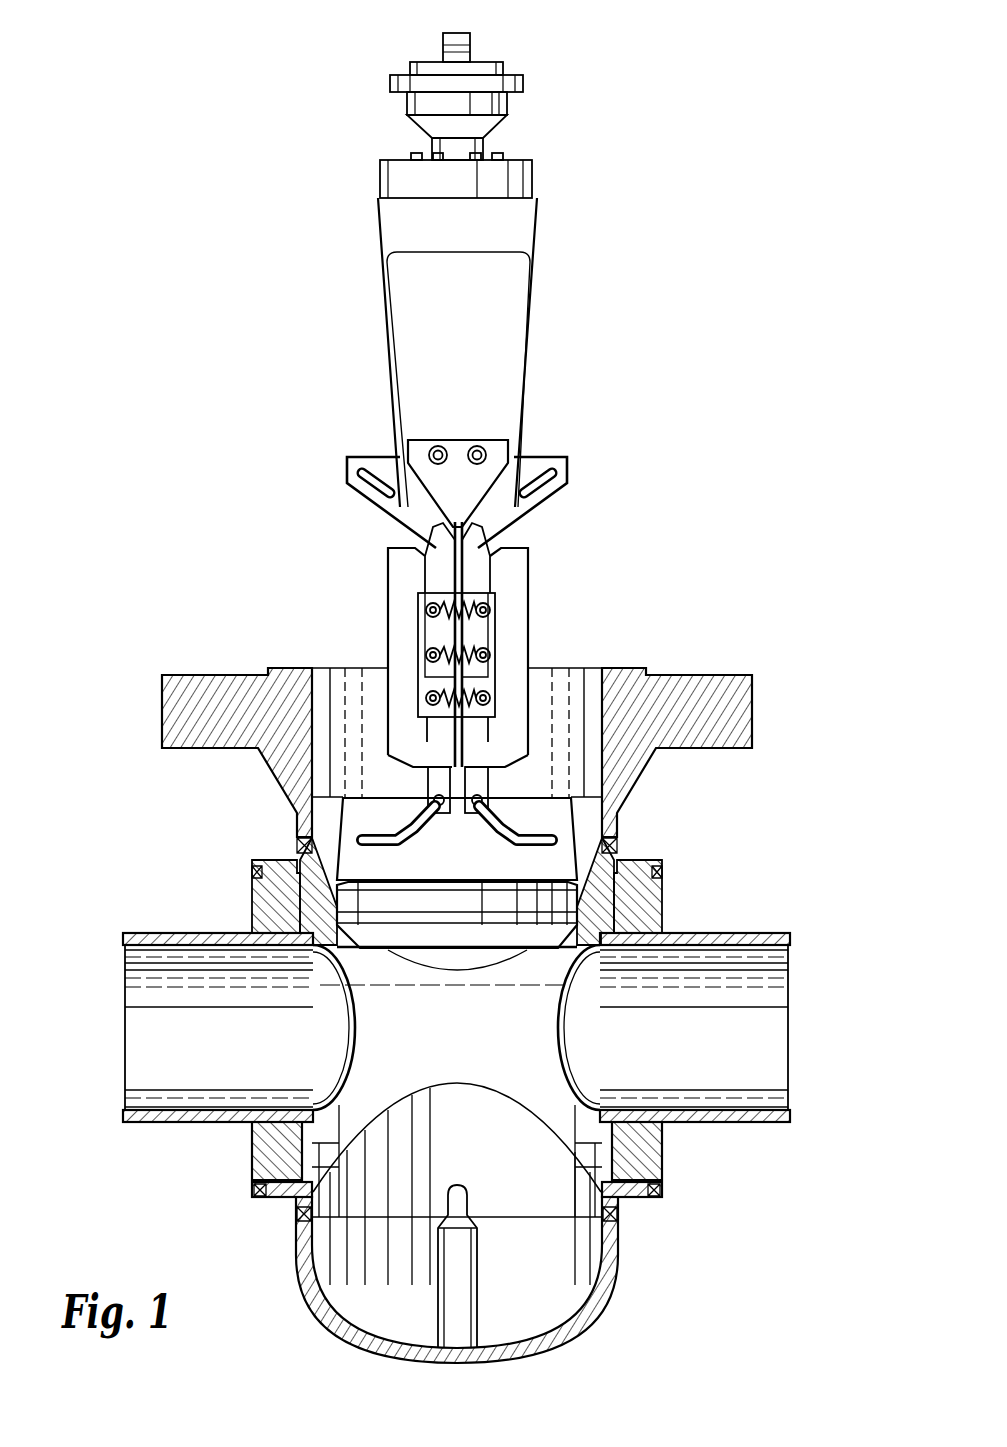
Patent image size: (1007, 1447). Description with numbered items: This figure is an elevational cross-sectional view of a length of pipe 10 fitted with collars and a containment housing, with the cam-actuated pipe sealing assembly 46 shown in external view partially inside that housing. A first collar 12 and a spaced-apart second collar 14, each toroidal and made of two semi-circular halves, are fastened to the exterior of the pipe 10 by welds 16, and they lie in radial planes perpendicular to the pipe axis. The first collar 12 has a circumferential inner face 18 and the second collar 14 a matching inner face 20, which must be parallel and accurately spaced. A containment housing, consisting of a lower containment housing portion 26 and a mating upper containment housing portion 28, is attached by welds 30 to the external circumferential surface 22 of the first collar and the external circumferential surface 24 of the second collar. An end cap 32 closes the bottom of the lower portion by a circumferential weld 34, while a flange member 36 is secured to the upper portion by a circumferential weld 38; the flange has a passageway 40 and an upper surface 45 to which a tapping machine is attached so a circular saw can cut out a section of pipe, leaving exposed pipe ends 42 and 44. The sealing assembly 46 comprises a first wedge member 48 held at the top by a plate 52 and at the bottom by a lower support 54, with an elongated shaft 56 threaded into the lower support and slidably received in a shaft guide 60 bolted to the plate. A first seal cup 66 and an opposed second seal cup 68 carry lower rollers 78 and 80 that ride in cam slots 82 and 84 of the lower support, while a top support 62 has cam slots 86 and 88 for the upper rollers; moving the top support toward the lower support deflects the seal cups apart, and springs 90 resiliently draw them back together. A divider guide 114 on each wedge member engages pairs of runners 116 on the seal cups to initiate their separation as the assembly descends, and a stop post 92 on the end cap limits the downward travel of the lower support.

The pipe 10 is at (463, 1000).
The first collar 12 is at (270, 1154).
The second collar 14 is at (645, 1145).
The welds 16 is at (254, 934).
The inner face 18 is at (326, 945).
The inner face 20 is at (588, 945).
The external circumferential surface 22 is at (270, 862).
The external circumferential surface 24 is at (645, 862).
The lower containment housing portion 26 is at (288, 1198).
The upper containment housing portion 28 is at (303, 845).
The welds 30 is at (256, 1185).
The end cap 32 is at (429, 1280).
The circumferential weld 34 is at (296, 1217).
The flange member 36 is at (636, 668).
The circumferential weld 38 is at (616, 840).
The passageway 40 is at (593, 705).
The pipe end 42 is at (337, 1107).
The pipe end 44 is at (585, 1107).
The upper surface 45 is at (712, 672).
The pipe sealing assembly 46 is at (503, 348).
The first wedge member 48 is at (413, 357).
The plate 52 is at (524, 180).
The lower support 54 is at (446, 866).
The shaft 56 is at (472, 40).
The shaft guide 60 is at (508, 110).
The top support 62 is at (463, 471).
The first seal cup 66 is at (397, 581).
The second seal cup 68 is at (519, 583).
The lower roller 78 is at (432, 797).
The lower roller 80 is at (484, 797).
The cam slot 82 is at (415, 822).
The cam slot 84 is at (497, 822).
The cam slot 86 is at (352, 484).
The cam slot 88 is at (570, 480).
The springs 90 is at (438, 690).
The stop post 92 is at (469, 1268).
The divider guide 114 is at (497, 448).
The runners 116 is at (437, 560).